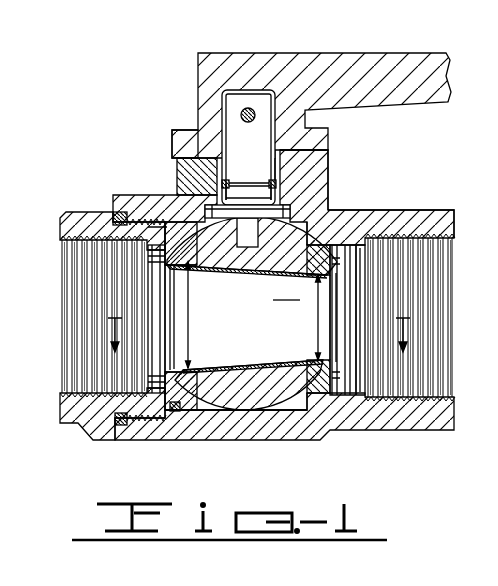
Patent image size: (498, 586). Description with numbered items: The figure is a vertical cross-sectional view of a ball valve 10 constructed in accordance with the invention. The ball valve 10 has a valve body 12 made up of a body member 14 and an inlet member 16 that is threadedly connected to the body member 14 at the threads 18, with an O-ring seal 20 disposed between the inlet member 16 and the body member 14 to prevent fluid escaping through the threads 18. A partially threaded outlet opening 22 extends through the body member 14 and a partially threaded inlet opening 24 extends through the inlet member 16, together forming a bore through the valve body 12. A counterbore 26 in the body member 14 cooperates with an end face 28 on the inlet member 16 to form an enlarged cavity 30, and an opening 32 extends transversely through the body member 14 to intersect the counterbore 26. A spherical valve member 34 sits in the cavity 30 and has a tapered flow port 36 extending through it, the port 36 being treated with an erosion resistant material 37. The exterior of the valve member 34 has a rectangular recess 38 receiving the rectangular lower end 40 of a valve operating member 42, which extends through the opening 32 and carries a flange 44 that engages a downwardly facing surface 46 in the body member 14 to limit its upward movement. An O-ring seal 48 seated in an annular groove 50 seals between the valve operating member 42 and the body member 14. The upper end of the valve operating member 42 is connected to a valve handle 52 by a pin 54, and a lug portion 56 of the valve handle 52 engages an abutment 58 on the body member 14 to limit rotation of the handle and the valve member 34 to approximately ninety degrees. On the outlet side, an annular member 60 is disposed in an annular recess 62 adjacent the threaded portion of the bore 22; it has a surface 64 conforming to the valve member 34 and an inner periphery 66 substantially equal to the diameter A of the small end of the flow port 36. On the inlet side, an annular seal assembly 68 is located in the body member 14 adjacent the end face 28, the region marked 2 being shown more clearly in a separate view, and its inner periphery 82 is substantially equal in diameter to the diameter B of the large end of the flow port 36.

The ball valve 10 is at (333, 46).
The valve body 12 is at (287, 442).
The body member 14 is at (160, 440).
The inlet member 16 is at (74, 423).
The threads 18 is at (140, 417).
The O-ring seal 20 is at (120, 208).
The partially threaded outlet opening 22 is at (440, 280).
The partially threaded inlet opening 24 is at (70, 305).
The counterbore 26 is at (207, 408).
The end face 28 is at (167, 402).
The enlarged cavity 30 is at (293, 408).
The opening 32 is at (278, 165).
The valve member 34 is at (243, 368).
The tapered flow port 36 is at (254, 336).
The erosion resistant material 37 is at (267, 268).
The rectangular recess 38 is at (247, 258).
The rectangular lower end 40 is at (257, 245).
The valve operating member 42 is at (258, 146).
The flange 44 is at (286, 208).
The downwardly facing surface 46 is at (294, 193).
The O-ring seal 48 is at (278, 187).
The annular groove 50 is at (248, 177).
The valve handle 52 is at (240, 52).
The pin 54 is at (256, 113).
The lug portion 56 is at (172, 143).
The abutments 58 is at (176, 179).
The annular member 60 is at (349, 234).
The annular recess 62 is at (330, 402).
The surface 64 is at (305, 363).
The inner periphery 66 is at (333, 286).
The annular seal assembly 68 is at (165, 360).
The inner periphery 82 is at (163, 262).
The diameter of the small end of the flow port A is at (315, 317).
The diameter of the large end of the flow port B is at (185, 315).
The section line 2- 2 is at (259, 348).